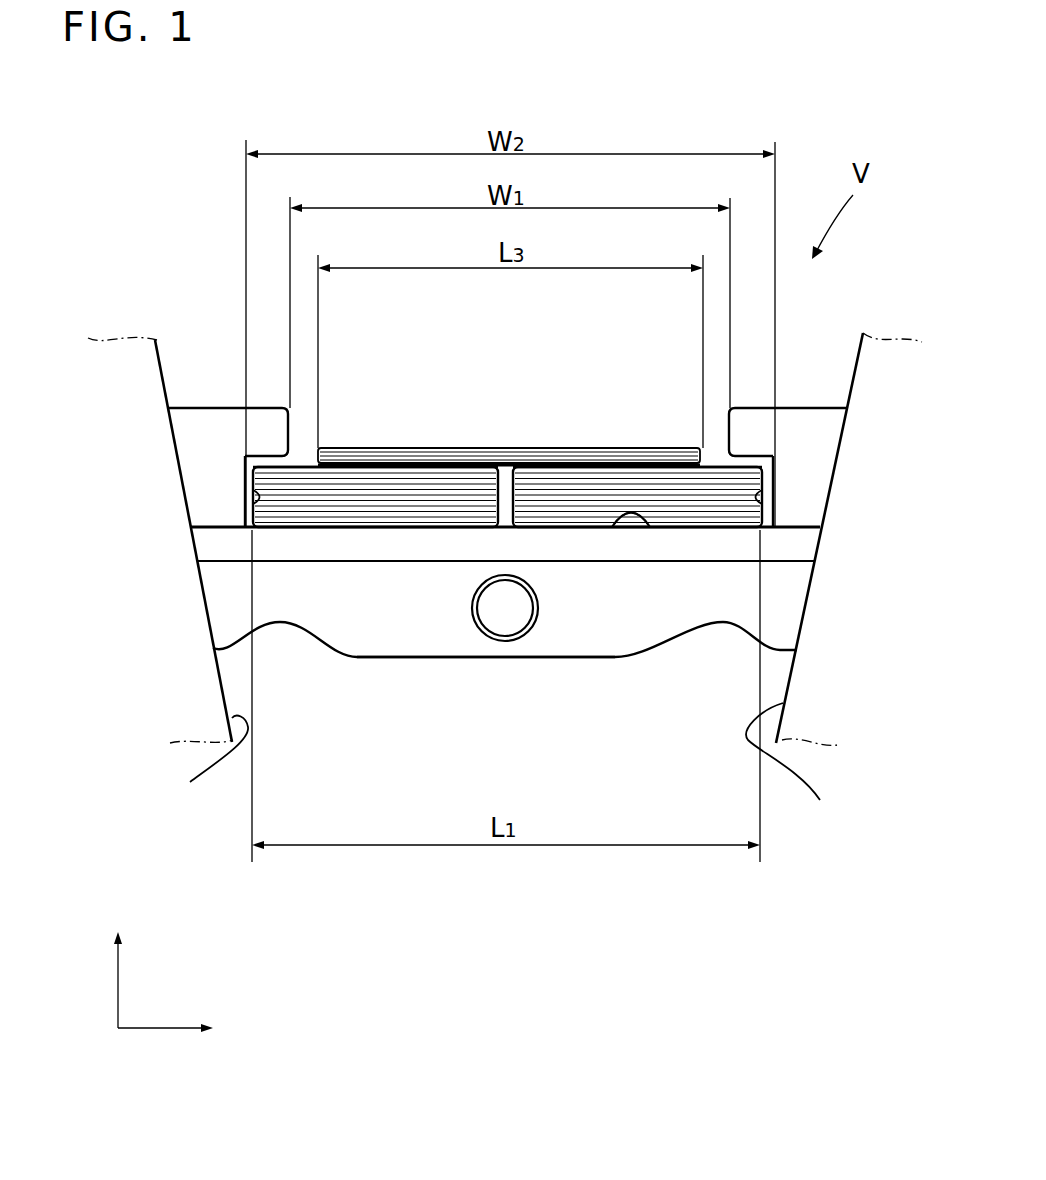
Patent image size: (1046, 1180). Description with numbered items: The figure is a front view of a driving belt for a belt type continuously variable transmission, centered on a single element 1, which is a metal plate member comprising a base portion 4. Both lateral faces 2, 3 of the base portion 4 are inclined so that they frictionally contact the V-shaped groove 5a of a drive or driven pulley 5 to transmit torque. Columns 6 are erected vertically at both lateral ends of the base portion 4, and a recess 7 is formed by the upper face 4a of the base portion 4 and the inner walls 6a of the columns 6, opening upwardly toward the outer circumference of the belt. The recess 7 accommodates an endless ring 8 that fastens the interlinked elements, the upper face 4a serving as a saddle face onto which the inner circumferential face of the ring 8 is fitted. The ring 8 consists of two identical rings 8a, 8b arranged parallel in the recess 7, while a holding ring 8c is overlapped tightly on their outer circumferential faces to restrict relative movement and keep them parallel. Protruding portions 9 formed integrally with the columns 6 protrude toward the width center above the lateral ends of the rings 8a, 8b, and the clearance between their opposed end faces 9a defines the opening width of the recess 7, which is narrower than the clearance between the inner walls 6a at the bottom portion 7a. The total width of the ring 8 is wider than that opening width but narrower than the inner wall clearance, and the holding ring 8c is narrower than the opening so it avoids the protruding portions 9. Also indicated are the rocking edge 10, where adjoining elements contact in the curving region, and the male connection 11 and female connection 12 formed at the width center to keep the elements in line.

The element 1 is at (332, 688).
The lateral face 2 is at (807, 603).
The lateral face 3 is at (203, 603).
The base portion 4 is at (657, 622).
The upper face (saddle face) 4a is at (612, 527).
The pulley 5 is at (188, 703).
The V-shaped groove 5a is at (503, 769).
The column 6 is at (203, 467).
The inner wall 6a is at (257, 497).
The recess 7 is at (523, 414).
The bottom portion 7a is at (631, 520).
The endless ring 8 is at (507, 528).
The first ring 8a is at (292, 475).
The second ring 8b is at (717, 480).
The holding ring 8c is at (453, 457).
The protruding portion 9 is at (267, 430).
The end face 9a is at (293, 423).
The rocking edge 10 is at (410, 563).
The male connection 11 is at (502, 607).
The female connection 12 is at (505, 608).